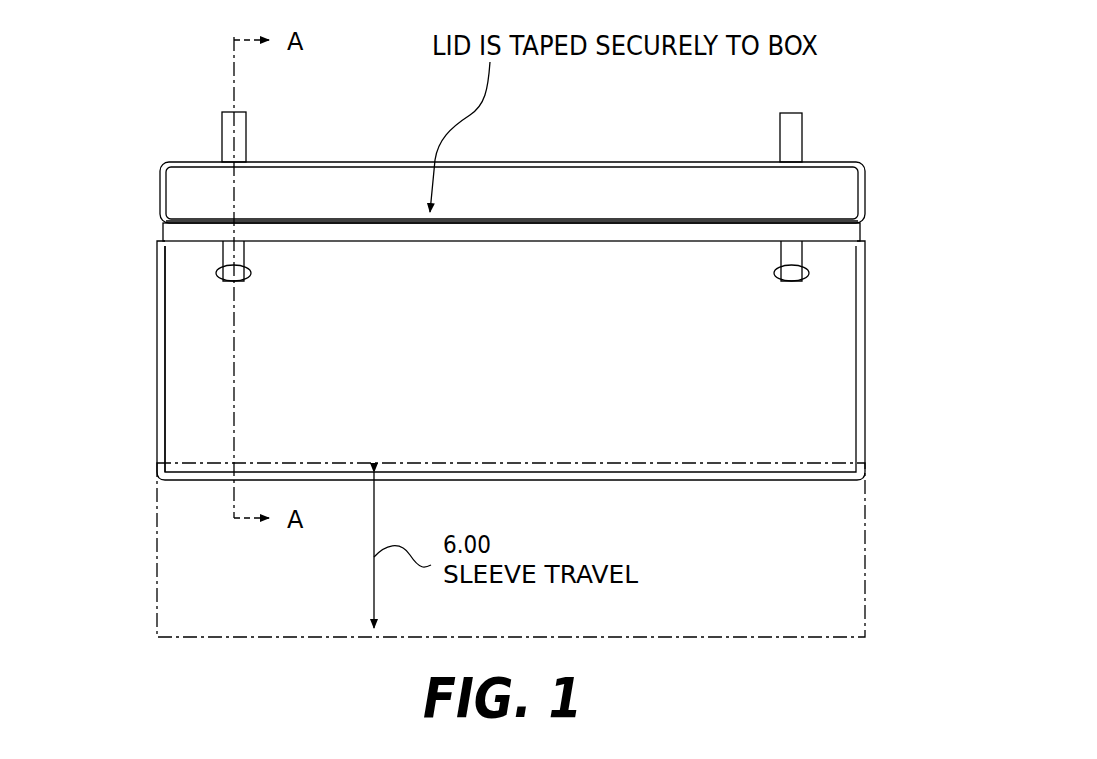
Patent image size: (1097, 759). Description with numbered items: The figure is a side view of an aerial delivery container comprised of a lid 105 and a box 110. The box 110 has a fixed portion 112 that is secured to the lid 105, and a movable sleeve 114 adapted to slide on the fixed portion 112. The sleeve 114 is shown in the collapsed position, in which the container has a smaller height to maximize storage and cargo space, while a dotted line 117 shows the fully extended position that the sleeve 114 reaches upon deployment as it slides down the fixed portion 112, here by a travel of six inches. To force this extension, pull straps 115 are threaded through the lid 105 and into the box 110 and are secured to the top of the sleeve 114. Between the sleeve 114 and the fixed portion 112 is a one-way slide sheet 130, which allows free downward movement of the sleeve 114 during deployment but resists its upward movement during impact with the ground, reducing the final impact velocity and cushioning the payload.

The lid 105 is at (168, 197).
The box 110 is at (860, 358).
The fixed portion 112 is at (552, 233).
The movable sleeve 114 is at (163, 395).
The pull straps 115 is at (246, 132).
The dotted line 117 is at (673, 637).
The one-way slide sheet 130 is at (846, 233).